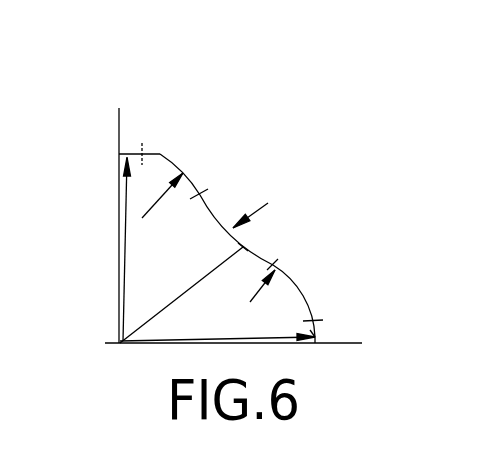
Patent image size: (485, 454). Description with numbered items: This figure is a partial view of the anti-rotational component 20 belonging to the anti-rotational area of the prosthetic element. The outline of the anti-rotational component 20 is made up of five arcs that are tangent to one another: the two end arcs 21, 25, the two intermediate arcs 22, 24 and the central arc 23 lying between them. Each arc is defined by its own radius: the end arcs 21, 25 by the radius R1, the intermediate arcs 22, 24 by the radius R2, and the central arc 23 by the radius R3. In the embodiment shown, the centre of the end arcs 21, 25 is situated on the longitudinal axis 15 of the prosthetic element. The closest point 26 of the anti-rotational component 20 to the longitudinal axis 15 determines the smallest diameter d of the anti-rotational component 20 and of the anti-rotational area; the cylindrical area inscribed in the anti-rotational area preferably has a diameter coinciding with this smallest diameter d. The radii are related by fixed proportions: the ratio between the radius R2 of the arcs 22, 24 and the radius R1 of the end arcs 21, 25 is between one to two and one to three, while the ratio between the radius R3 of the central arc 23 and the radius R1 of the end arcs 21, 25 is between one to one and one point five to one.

The longitudinal axis 15 is at (105, 344).
The anti-rotational component 20 is at (325, 165).
The end arc 21 is at (120, 140).
The arc 22 is at (162, 154).
The central arc 23 is at (214, 208).
The arc 24 is at (298, 285).
The end arc 25 is at (316, 335).
The closest point 26 is at (244, 247).
The radius of the end arcs R1 is at (217, 250).
The radius of the arcs R2 is at (208, 238).
The radius of the central arc R3 is at (265, 206).
The smallest diameter d is at (181, 295).